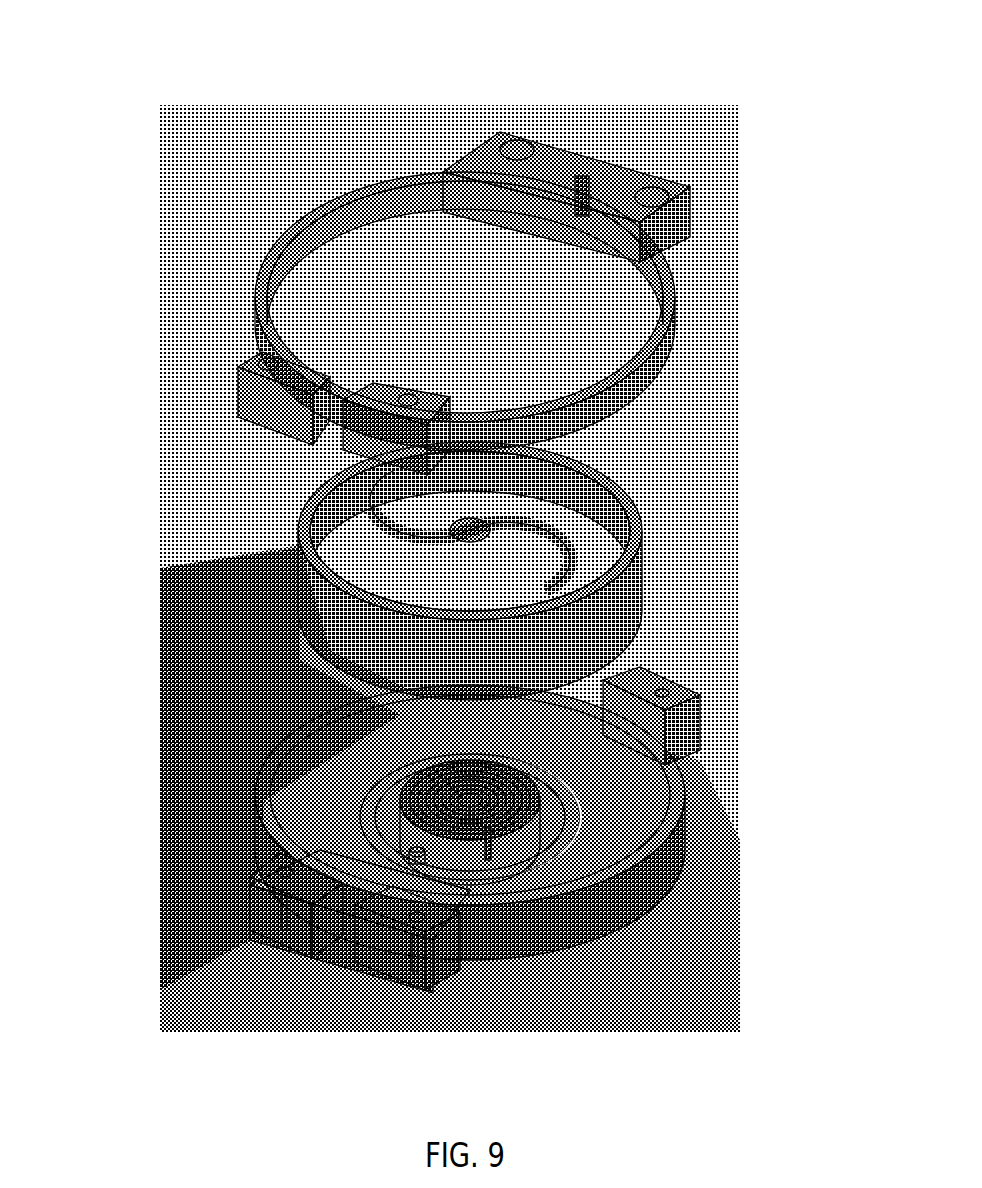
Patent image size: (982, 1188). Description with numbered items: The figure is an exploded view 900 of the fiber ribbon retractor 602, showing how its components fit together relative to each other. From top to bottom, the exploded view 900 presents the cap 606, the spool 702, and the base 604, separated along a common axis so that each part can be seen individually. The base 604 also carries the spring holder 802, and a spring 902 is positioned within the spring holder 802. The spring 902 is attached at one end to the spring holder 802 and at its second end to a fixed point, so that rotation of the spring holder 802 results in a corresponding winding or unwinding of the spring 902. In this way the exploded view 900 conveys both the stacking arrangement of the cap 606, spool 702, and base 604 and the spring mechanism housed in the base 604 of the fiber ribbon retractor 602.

The exploded view 900 is at (160, 68).
The fiber ribbon retractor 602 is at (137, 443).
The cap 606 is at (682, 340).
The spool 702 is at (670, 582).
The base 604 is at (714, 727).
The spring holder 802 is at (543, 832).
The spring 902 is at (490, 836).